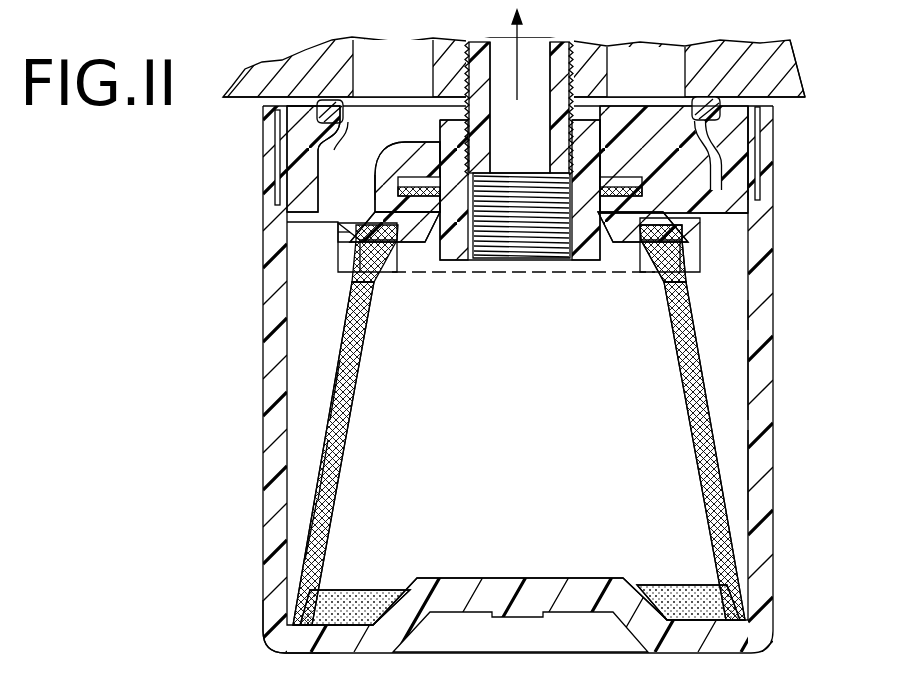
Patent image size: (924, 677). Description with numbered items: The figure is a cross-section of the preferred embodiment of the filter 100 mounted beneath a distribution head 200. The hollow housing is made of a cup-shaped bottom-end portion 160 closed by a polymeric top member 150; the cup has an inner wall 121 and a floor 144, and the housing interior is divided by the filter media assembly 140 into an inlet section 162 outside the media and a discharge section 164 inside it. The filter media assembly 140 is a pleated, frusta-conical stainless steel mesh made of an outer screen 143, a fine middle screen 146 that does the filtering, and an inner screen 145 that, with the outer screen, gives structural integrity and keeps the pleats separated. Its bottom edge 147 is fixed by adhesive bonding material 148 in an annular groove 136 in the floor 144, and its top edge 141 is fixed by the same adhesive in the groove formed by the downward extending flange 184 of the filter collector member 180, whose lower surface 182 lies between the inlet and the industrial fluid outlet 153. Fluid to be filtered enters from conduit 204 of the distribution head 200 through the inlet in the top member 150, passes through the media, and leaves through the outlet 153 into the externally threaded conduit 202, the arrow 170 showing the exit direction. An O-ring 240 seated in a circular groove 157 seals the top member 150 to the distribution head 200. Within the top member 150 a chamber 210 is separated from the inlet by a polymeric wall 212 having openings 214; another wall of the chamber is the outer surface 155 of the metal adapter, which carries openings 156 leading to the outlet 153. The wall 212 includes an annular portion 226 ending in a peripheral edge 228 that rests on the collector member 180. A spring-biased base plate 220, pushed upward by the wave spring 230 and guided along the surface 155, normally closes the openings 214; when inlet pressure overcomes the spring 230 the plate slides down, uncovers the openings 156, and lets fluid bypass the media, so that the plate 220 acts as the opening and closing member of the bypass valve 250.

The filter 100 is at (213, 463).
The inner wall 121 is at (747, 320).
The annular groove 136 is at (683, 620).
The filter media assembly 140 is at (318, 388).
The top or open-end portion edge 141 is at (378, 283).
The outer screen 143 is at (332, 425).
The floor 144 is at (503, 578).
The inner screen 145 is at (330, 522).
The middle woven mesh screen 146 is at (330, 487).
The bottom or closed-end portion edge 147 is at (330, 627).
The adhesive bonding material 148 is at (392, 240).
The top member 150 is at (728, 188).
The industrial fluid outlet 153 is at (502, 238).
The outer surface of metal adapter 155 is at (427, 142).
The openings 156 is at (587, 208).
The circular groove 157 is at (755, 132).
The cup-shaped bottom-end portion 160 is at (810, 318).
The inlet section 162 is at (710, 378).
The discharge section 164 is at (713, 443).
The arrow 170 is at (520, 72).
The filter collector member 180 is at (700, 225).
The lower surface 182 is at (612, 238).
The downward extending flange 184 is at (700, 250).
The distribution head 200 is at (757, 10).
The externally threaded conduit 202 is at (568, 48).
The conduit 204 is at (370, 50).
The chamber 210 is at (400, 207).
The wall 212 is at (372, 170).
The openings 214 is at (415, 148).
The spring-biased base plate 220 is at (757, 176).
The annular portion 226 is at (387, 213).
The peripheral edge 228 is at (343, 232).
The spring 230 is at (750, 218).
The O-ring 240 is at (762, 60).
The bypass valve 250 is at (340, 157).